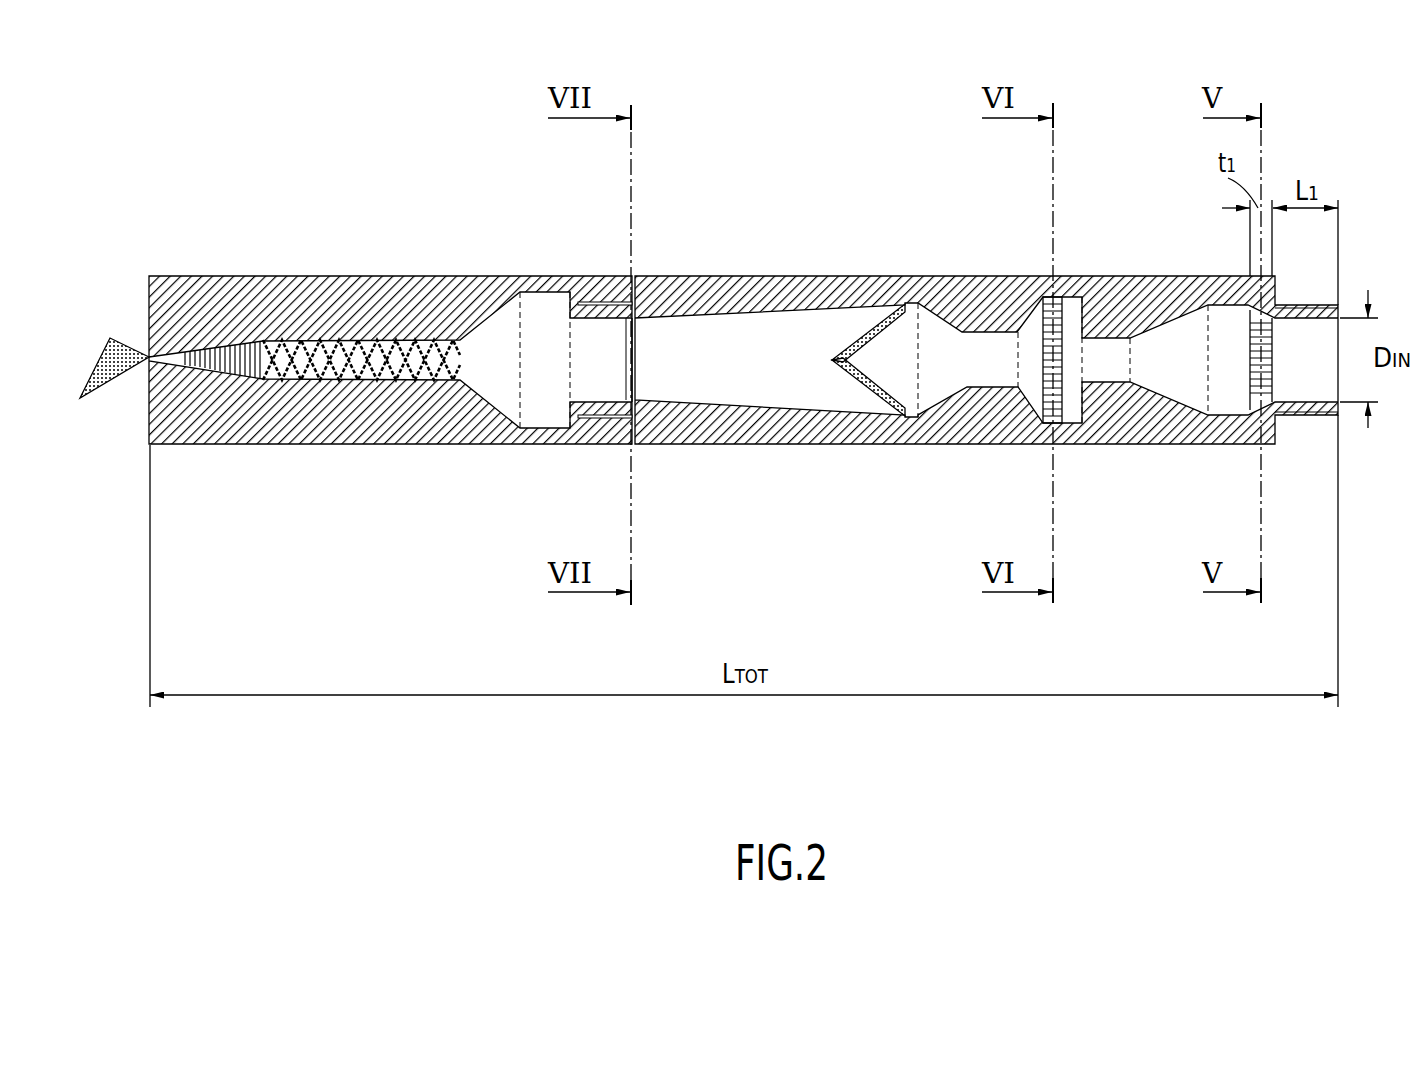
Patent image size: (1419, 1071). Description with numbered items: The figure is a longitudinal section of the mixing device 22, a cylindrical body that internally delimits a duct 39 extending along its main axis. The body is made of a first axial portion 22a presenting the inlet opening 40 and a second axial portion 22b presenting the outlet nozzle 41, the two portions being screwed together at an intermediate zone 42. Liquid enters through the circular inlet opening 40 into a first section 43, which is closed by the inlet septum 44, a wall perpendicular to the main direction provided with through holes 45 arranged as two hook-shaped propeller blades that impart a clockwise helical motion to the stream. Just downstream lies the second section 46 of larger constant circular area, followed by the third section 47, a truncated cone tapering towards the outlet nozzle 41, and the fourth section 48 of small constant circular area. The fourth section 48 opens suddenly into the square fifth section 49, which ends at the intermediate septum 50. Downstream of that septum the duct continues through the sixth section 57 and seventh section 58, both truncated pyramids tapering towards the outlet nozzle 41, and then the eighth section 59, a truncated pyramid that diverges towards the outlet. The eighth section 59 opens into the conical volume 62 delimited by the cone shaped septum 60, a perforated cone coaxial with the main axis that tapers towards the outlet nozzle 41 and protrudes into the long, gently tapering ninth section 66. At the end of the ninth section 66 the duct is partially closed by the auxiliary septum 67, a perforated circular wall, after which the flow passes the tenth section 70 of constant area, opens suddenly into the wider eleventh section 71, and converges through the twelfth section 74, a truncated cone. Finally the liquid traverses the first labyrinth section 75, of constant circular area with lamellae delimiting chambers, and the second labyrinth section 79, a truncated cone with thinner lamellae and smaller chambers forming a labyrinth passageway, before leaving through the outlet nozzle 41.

The mixing device 22 is at (423, 113).
The first axial portion 22a is at (896, 276).
The second axial portion 22b is at (352, 276).
The duct 39 is at (697, 322).
The inlet opening 40 is at (1338, 375).
The outlet nozzle 41 is at (150, 332).
The intermediate zone 42 is at (595, 446).
The first section 43 is at (1297, 377).
The inlet septum 44 is at (1252, 395).
The through holes 45 is at (1253, 327).
The second section 46 is at (1242, 375).
The third section 47 is at (1186, 375).
The fourth section 48 is at (1119, 375).
The fifth section 49 is at (1072, 350).
The intermediate septum 50 is at (1045, 426).
The sixth section 57 is at (1033, 353).
The seventh section 58 is at (1003, 375).
The eighth section 59 is at (953, 375).
The cone shaped septum 60 is at (858, 396).
The conical volume 62 is at (910, 375).
The ninth section 66 is at (756, 375).
The auxiliary septum 67 is at (647, 397).
The tenth section 70 is at (610, 375).
The eleventh section 71 is at (559, 375).
The twelfth section 74 is at (504, 375).
The first labyrinth section 75 is at (350, 383).
The second labyrinth section 79 is at (213, 383).